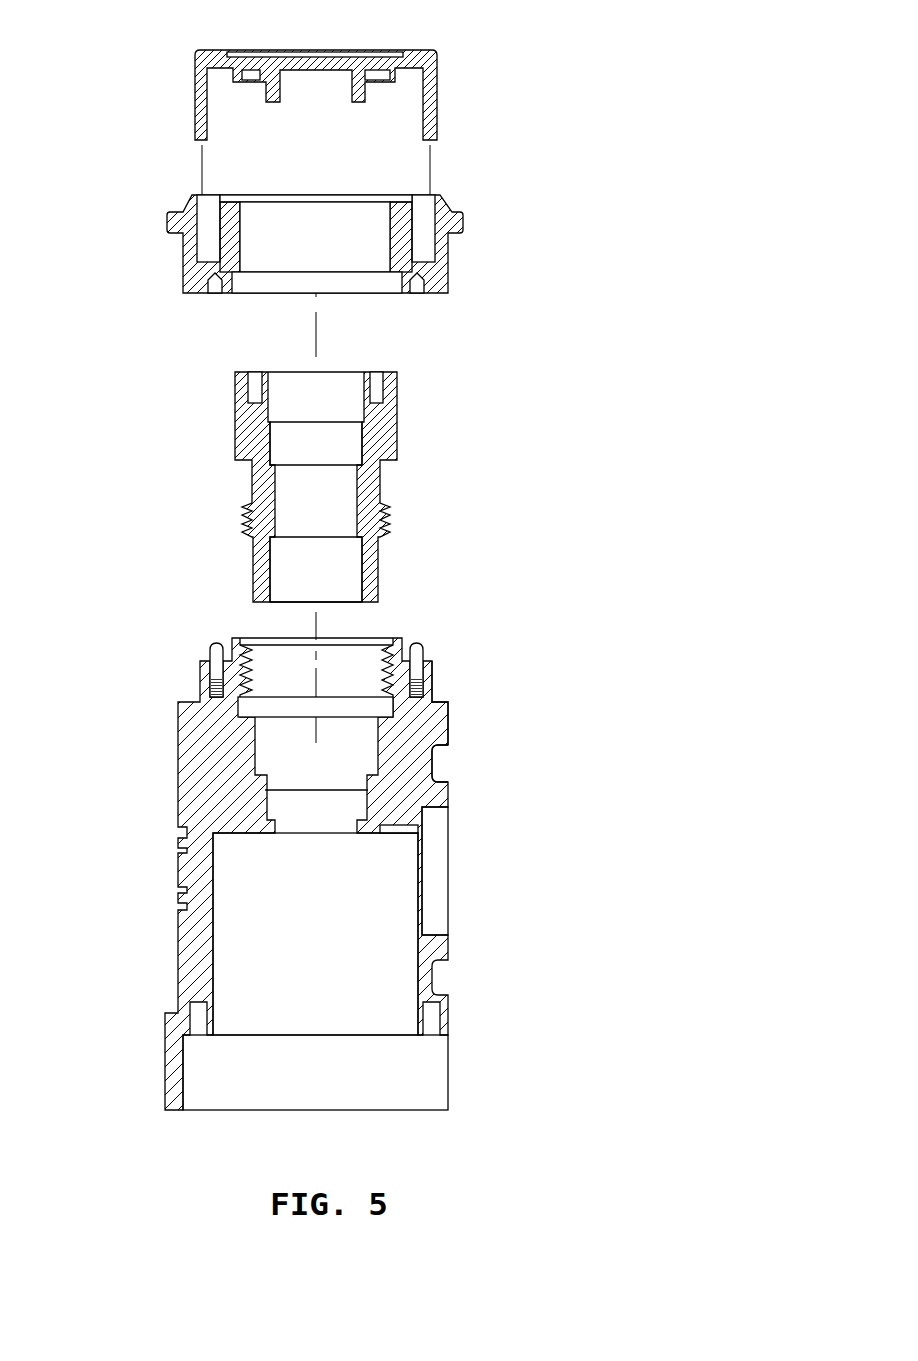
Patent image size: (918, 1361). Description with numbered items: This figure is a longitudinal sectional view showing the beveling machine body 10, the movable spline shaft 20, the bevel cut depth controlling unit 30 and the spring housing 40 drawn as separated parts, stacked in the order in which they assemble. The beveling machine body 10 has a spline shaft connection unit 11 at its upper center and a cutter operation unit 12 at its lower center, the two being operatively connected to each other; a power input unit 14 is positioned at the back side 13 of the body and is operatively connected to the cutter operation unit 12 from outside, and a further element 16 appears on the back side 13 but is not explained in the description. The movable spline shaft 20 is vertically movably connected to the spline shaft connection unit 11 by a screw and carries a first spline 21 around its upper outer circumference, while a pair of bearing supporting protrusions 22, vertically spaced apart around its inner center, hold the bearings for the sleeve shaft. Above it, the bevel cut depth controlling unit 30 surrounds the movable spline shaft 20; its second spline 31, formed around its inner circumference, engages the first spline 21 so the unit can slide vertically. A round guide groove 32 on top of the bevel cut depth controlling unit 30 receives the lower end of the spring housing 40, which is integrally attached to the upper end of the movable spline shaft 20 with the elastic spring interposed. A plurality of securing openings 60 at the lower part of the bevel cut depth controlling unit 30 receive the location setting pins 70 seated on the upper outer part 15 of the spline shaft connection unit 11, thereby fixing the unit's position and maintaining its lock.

The beveling machine body 10 is at (340, 851).
The spline shaft connection unit 11 is at (355, 667).
The cutter operation unit 12 is at (268, 945).
The back side 13 is at (450, 725).
The power input unit 14 is at (433, 875).
The upper outer part 15 is at (203, 660).
The recess 16 is at (440, 768).
The movable spline shaft 20 is at (341, 480).
The first spline 21 is at (395, 398).
The bearing supporting protrusions 22 is at (270, 462).
The bevel cut depth controlling unit 30 is at (298, 246).
The second spline 31 is at (395, 238).
The guide groove 32 is at (212, 247).
The spring housing 40 is at (430, 88).
The securing openings 60 is at (217, 285).
The location setting pins 70 is at (423, 648).